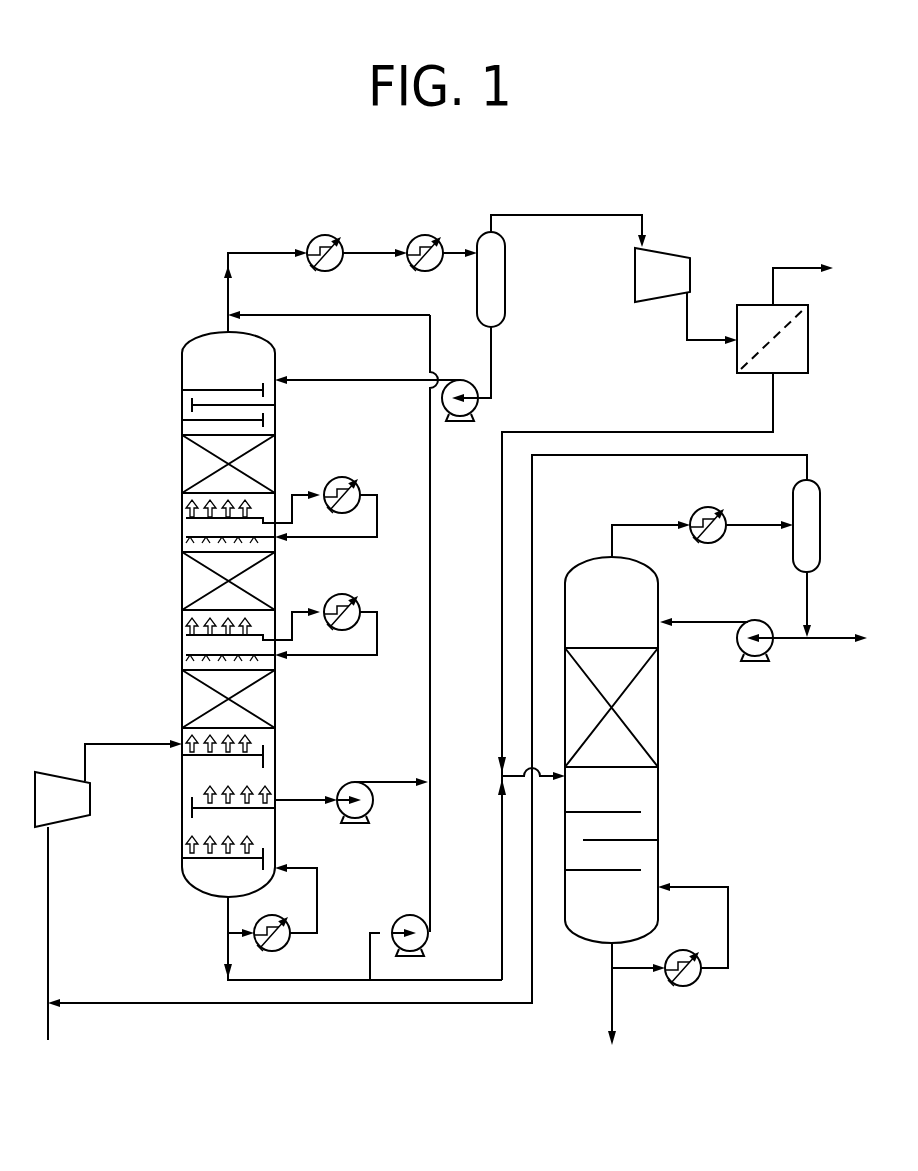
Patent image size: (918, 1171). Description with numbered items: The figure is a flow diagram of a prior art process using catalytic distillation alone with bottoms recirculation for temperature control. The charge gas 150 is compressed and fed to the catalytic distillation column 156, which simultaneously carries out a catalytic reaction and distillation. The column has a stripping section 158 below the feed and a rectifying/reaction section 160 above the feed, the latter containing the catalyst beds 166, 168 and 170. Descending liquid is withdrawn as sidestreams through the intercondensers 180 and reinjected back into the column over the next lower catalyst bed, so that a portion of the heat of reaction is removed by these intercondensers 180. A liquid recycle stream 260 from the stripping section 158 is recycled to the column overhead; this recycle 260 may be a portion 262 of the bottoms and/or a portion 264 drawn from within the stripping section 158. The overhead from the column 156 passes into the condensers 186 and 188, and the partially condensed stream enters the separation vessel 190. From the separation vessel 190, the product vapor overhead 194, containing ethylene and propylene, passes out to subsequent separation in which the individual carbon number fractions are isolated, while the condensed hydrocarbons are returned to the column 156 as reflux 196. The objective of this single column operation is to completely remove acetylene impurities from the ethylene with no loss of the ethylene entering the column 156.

The charge gas 150 is at (53, 883).
The catalytic distillation column 156 is at (180, 460).
The stripping section 158 is at (258, 776).
The rectifying/reaction section 160 is at (183, 497).
The catalyst bed 166 is at (190, 697).
The catalyst bed 168 is at (190, 582).
The catalyst bed 170 is at (188, 452).
The intercondensers 180 is at (350, 596).
The condenser 186 is at (322, 236).
The condenser 188 is at (428, 235).
The separation vessel 190 is at (498, 284).
The vapor overhead 194 is at (567, 213).
The reflux 196 is at (343, 377).
The liquid recycle stream 260 is at (432, 620).
The portion of the bottoms 262 is at (432, 866).
The portion from within the stripping section 264 is at (380, 783).